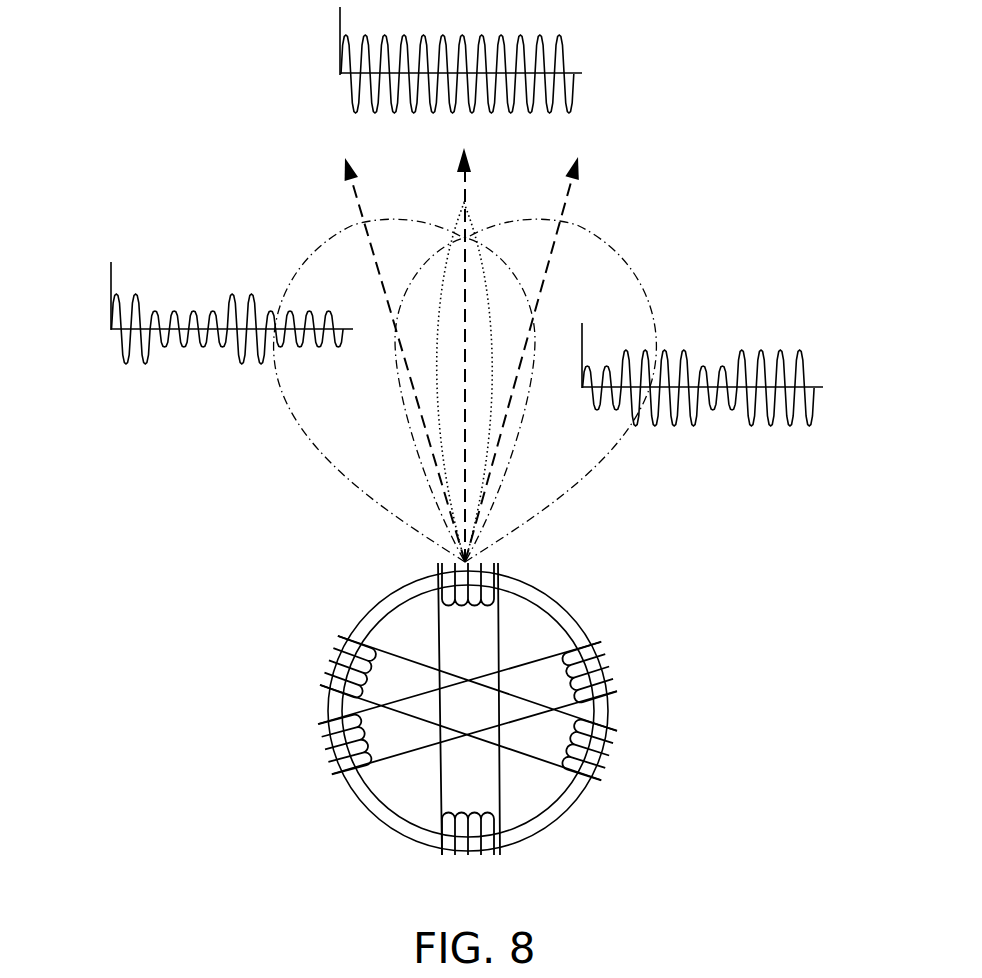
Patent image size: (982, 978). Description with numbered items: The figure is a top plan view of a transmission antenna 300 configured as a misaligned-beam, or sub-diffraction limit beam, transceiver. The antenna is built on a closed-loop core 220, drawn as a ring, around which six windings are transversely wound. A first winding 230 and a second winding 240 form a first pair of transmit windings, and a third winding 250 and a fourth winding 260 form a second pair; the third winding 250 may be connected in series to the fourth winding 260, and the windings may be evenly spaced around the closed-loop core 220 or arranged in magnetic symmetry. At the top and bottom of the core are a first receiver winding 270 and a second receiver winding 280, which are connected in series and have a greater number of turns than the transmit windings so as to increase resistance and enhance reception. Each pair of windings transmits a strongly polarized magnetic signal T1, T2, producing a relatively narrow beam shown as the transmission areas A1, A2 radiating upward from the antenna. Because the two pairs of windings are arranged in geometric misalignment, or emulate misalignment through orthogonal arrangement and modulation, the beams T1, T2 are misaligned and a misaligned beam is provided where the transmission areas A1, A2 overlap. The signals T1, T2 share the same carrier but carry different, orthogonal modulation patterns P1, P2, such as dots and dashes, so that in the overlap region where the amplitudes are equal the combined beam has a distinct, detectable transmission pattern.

The transmission antenna 300 is at (428, 729).
The closed-loop core 220 is at (565, 615).
The first winding 230 is at (620, 662).
The second winding 240 is at (316, 752).
The third winding 250 is at (622, 752).
The fourth winding 260 is at (318, 647).
The first receiver winding 270 is at (430, 561).
The second receiver winding 280 is at (446, 874).
The modulation pattern P1 is at (111, 296).
The modulation pattern P2 is at (805, 373).
The polarized transmitted signal T1 is at (382, 356).
The polarized transmitted signal T2 is at (546, 359).
The transmission area A1 is at (340, 432).
The transmission area A2 is at (568, 448).